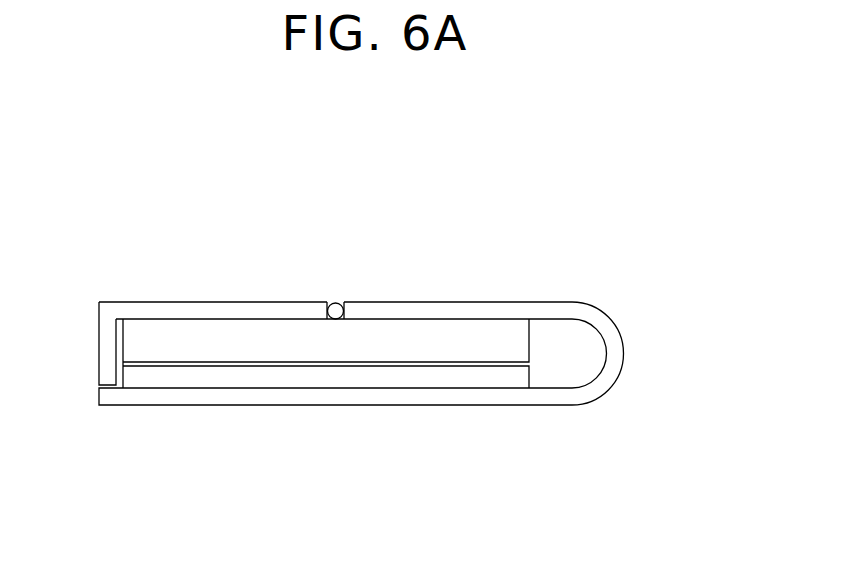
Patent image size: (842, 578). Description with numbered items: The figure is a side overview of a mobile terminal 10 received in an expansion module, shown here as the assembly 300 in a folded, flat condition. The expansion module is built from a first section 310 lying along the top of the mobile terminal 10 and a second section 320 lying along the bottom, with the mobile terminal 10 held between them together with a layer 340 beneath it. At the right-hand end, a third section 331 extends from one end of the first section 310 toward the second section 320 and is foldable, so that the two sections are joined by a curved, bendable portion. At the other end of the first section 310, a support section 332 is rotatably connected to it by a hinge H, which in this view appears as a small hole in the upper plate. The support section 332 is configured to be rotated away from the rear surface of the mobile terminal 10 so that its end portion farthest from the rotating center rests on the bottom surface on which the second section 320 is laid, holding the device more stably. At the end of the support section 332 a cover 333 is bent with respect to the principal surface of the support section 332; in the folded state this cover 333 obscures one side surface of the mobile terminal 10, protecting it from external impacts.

The display device 300 is at (598, 232).
The first section 310 is at (438, 292).
The second section 320 is at (436, 418).
The third section 331 is at (600, 325).
The support section 332 is at (256, 310).
The cover 333 is at (107, 345).
The support member 340 is at (177, 377).
The mobile terminal 10 is at (190, 330).
The hinge H is at (336, 298).